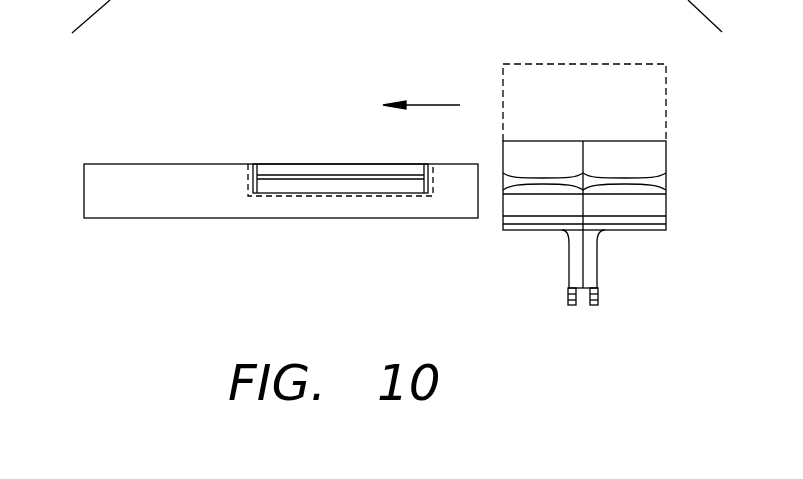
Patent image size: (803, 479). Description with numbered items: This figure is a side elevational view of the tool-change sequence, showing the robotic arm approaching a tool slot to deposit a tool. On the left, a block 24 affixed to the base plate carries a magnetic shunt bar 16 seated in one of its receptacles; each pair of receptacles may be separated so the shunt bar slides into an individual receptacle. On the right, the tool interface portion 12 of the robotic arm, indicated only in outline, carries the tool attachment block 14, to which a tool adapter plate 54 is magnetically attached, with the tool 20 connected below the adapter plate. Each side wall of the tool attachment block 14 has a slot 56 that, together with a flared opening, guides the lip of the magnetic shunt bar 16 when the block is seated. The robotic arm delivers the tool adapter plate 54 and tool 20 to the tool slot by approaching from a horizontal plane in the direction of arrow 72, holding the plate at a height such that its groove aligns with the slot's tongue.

The tool interface portion 12 is at (650, 77).
The tool attachment block 14 is at (625, 186).
The magnetic shunt bar 16 is at (327, 168).
The tool 20 is at (570, 258).
The block 24 is at (187, 163).
The tool adapter plate 54 is at (657, 207).
The slot 56 is at (547, 174).
The arrow 72 is at (440, 105).